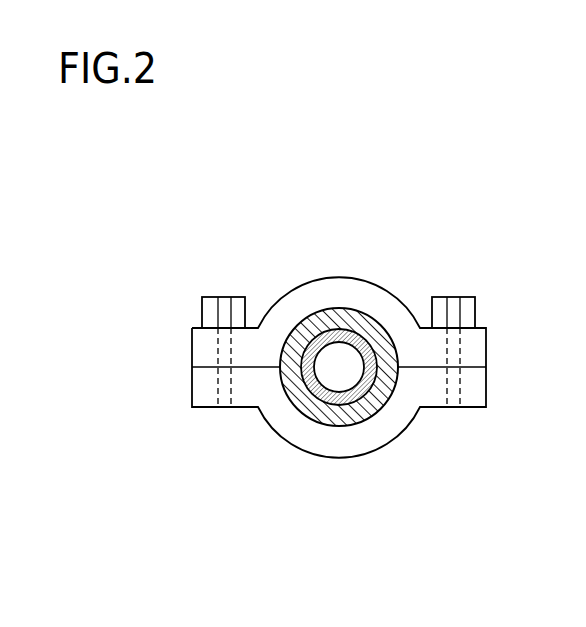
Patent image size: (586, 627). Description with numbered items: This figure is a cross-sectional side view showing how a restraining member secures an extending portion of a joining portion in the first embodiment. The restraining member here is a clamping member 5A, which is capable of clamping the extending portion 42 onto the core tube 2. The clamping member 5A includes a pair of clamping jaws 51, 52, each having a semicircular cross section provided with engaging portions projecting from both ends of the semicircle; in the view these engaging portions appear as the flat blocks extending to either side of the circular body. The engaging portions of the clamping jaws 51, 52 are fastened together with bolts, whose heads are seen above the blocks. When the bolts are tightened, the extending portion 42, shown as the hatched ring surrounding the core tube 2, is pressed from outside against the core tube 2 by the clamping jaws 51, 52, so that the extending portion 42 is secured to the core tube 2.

The clamping member 5A is at (339, 355).
The clamping jaw 51 is at (307, 299).
The clamping jaw 52 is at (344, 440).
The extending portion 42 is at (376, 396).
The core tube 2 is at (323, 403).